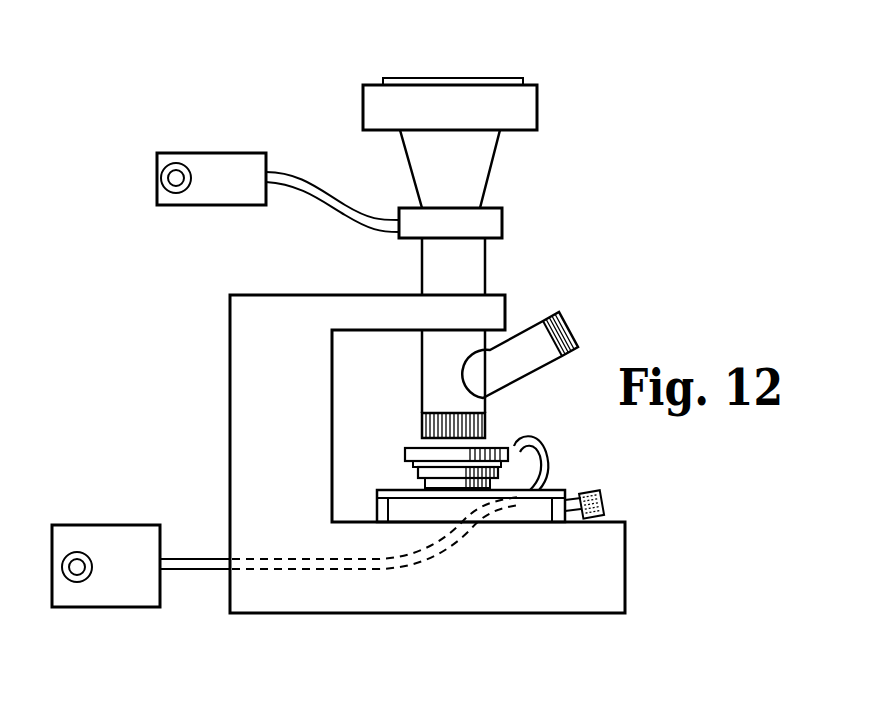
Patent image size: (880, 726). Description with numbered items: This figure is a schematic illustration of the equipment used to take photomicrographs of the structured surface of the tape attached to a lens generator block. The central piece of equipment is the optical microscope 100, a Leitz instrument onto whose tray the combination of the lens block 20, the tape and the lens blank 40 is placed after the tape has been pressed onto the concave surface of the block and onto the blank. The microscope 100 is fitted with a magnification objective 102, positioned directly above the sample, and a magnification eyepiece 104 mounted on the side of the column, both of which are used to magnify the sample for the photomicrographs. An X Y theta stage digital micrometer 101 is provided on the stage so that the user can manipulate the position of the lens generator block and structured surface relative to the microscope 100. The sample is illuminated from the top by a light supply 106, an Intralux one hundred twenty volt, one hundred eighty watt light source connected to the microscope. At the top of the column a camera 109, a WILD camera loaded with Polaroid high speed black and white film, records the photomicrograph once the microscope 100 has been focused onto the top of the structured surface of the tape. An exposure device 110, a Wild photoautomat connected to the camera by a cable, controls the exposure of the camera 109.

The optical microscope 100 is at (214, 395).
The camera 109 is at (450, 78).
The exposure device 110 is at (226, 153).
The magnification eyepiece 104 is at (542, 320).
The magnification objective 102 is at (486, 425).
The lens blank 40 is at (386, 453).
The lens block 20 is at (398, 480).
The X Y theta stage digital micrometer 101 is at (603, 500).
The light supply 106 is at (126, 607).